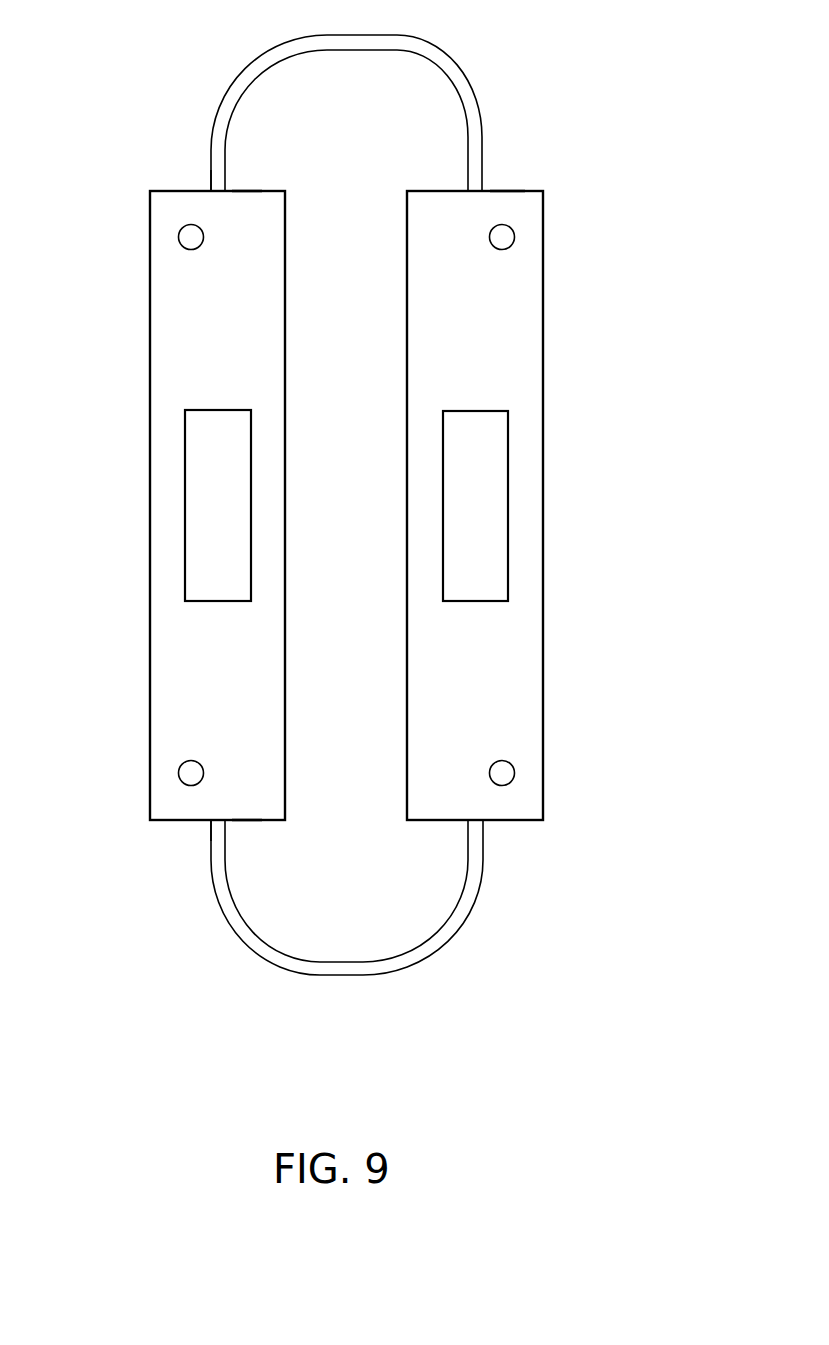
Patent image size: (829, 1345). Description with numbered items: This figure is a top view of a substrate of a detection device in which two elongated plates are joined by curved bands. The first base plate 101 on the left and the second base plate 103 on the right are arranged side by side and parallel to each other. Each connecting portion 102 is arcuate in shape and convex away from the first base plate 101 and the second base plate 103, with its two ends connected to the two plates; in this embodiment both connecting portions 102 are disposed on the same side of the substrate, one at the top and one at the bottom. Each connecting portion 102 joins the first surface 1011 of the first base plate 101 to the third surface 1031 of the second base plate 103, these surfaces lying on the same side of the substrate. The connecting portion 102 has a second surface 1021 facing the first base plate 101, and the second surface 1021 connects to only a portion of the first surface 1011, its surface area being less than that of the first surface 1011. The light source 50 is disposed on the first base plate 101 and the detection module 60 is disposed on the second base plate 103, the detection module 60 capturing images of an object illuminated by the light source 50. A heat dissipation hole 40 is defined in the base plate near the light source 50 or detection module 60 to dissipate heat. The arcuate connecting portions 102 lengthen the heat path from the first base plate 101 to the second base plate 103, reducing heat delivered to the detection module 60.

The first base plate 101 is at (165, 463).
The connecting portion 102 is at (440, 70).
The second base plate 103 is at (523, 328).
The first surface 1011 is at (249, 186).
The second surface 1021 is at (212, 188).
The third surface 1031 is at (509, 186).
The heat dissipation hole 40 is at (190, 238).
The light source 50 is at (203, 515).
The detection module 60 is at (497, 512).